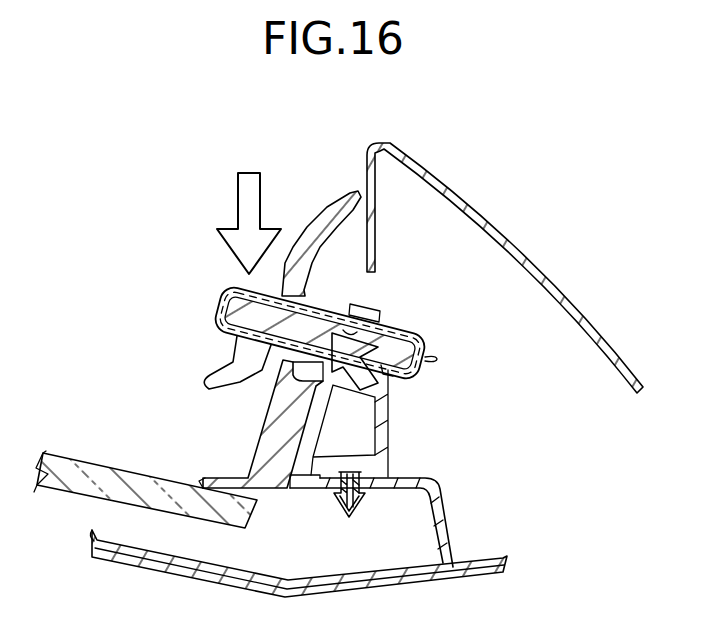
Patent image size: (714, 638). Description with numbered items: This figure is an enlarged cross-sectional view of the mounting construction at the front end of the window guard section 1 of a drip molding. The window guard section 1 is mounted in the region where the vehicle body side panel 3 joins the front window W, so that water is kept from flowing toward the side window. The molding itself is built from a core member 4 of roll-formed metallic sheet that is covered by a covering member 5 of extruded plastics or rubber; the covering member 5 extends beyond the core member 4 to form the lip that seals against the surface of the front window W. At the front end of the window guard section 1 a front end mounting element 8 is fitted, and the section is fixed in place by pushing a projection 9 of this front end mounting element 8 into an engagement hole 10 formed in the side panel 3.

The window guard section 1 is at (222, 294).
The side panel 3 is at (506, 244).
The core member 4 is at (373, 309).
The covering member 5 is at (217, 330).
The front end mounting element 8 is at (392, 418).
The projection 9 is at (336, 504).
The engagement hole 10 is at (363, 495).
The front window W is at (100, 455).